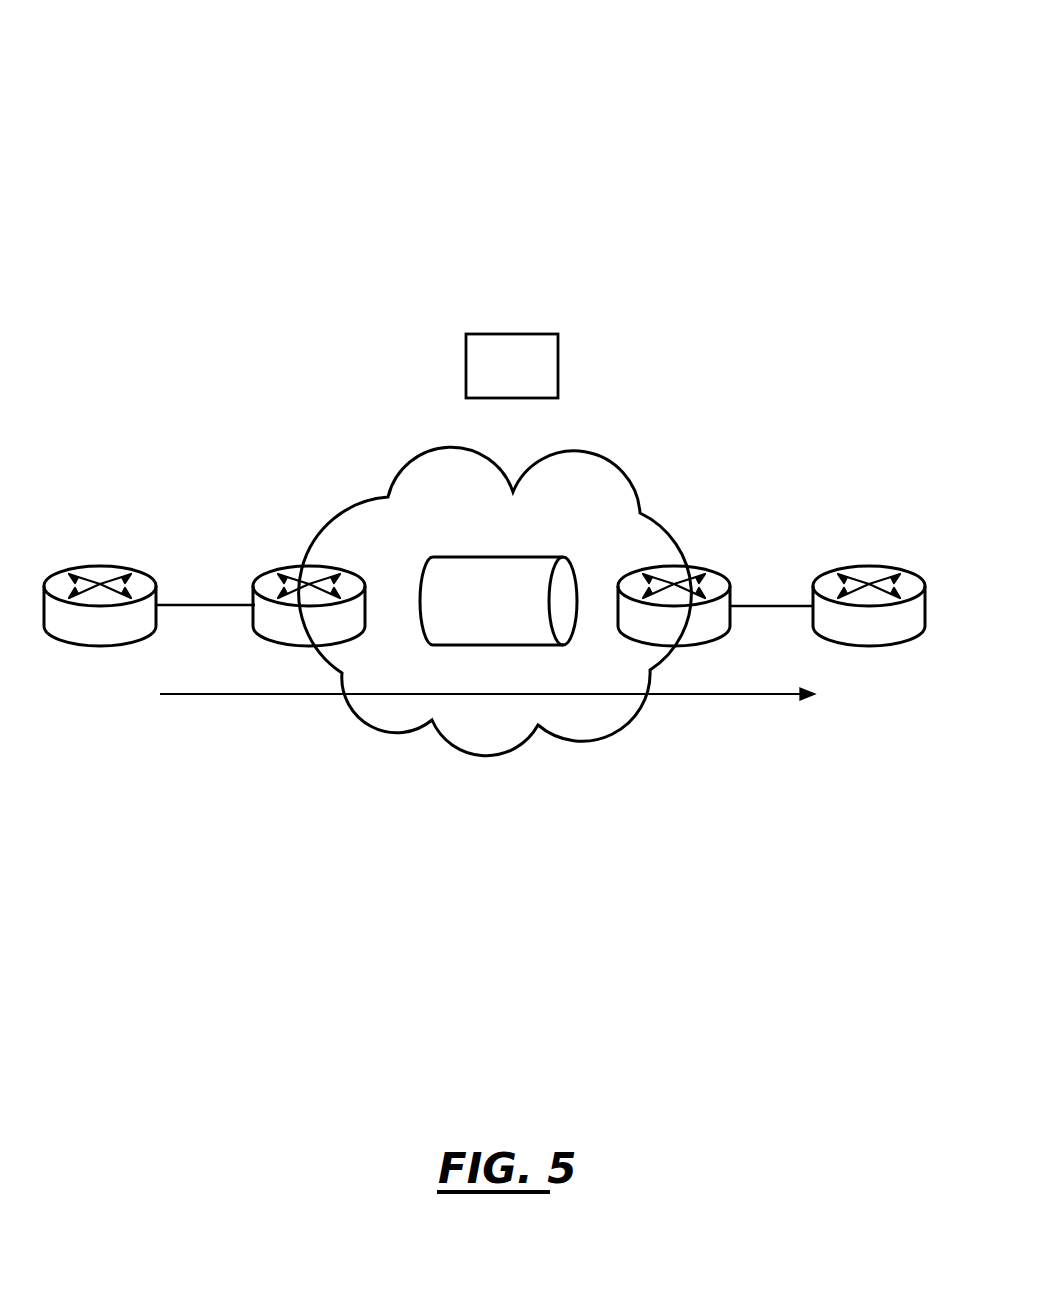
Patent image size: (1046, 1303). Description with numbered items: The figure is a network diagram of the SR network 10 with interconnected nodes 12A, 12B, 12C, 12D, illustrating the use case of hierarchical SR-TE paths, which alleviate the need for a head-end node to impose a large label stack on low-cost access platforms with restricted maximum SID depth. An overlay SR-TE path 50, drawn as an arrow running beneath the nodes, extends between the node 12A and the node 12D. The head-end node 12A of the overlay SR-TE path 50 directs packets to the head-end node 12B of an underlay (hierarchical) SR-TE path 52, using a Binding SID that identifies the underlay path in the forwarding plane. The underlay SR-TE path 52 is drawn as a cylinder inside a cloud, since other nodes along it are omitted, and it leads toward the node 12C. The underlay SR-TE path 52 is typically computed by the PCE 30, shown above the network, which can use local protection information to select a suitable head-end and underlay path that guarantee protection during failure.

The SR network 10 is at (465, 68).
The head-end node 12A is at (118, 567).
The head-end node of underlay SR-TE path 12B is at (342, 568).
The node 12C is at (685, 568).
The node 12D is at (872, 567).
The PCE 30 is at (557, 365).
The overlay SR-TE path 50 is at (278, 694).
The underlay (hierarchical) SR-TE path 52 is at (505, 555).